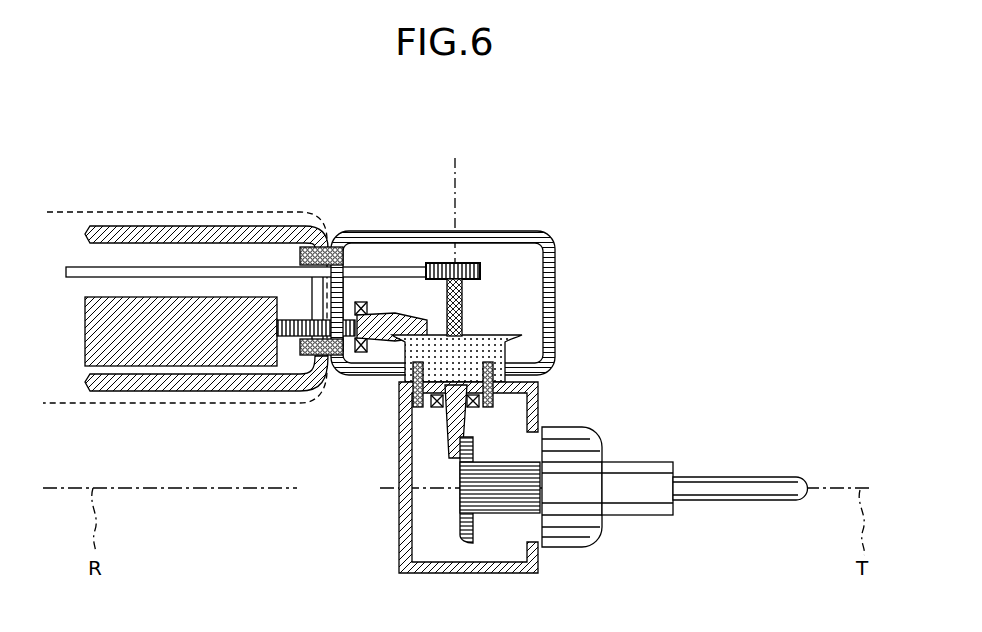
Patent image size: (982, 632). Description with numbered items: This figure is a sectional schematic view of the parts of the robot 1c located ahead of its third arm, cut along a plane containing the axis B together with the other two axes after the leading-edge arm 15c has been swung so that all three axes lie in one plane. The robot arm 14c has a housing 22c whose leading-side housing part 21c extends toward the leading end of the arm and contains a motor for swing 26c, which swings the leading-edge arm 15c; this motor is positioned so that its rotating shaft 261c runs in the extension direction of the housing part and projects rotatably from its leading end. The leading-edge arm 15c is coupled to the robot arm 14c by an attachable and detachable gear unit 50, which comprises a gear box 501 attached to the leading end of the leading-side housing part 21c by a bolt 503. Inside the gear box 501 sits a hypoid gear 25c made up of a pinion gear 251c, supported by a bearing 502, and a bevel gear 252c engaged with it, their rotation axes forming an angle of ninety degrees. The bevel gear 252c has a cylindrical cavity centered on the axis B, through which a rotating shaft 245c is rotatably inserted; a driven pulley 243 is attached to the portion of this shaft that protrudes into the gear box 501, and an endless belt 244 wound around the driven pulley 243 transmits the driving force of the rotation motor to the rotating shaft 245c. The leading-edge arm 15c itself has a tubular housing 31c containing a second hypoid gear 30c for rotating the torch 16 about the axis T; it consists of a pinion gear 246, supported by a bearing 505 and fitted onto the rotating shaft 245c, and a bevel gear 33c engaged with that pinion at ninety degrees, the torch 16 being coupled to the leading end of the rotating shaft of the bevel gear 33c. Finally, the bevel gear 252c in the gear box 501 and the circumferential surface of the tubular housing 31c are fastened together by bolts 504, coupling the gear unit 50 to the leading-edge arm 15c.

The robot 1c is at (639, 121).
The robot arm 14c is at (187, 160).
The leading-edge arm 15c is at (230, 510).
The torch 16 is at (660, 462).
The leading-side housing part 21c is at (72, 212).
The housing 22c is at (150, 226).
The driven pulley 243 is at (440, 263).
The endless belt 244 is at (200, 267).
The rotating shaft 245c is at (462, 290).
The pinion gear 246 is at (445, 430).
The hypoid gear 25c is at (666, 277).
The pinion gear 251c is at (430, 322).
The bevel gear 252c is at (520, 335).
The motor for swing 26c is at (178, 391).
The rotating shaft 261c is at (285, 320).
The hypoid gear 30c is at (315, 465).
The tubular housing 31c is at (540, 562).
The bevel gear 33c is at (460, 527).
The gear unit 50 is at (632, 197).
The gear box 501 is at (540, 232).
The bearing 502 is at (359, 302).
The bolt 503 is at (305, 248).
The bolts 504 is at (430, 400).
The bearing 505 is at (412, 420).
The axis B is at (455, 178).